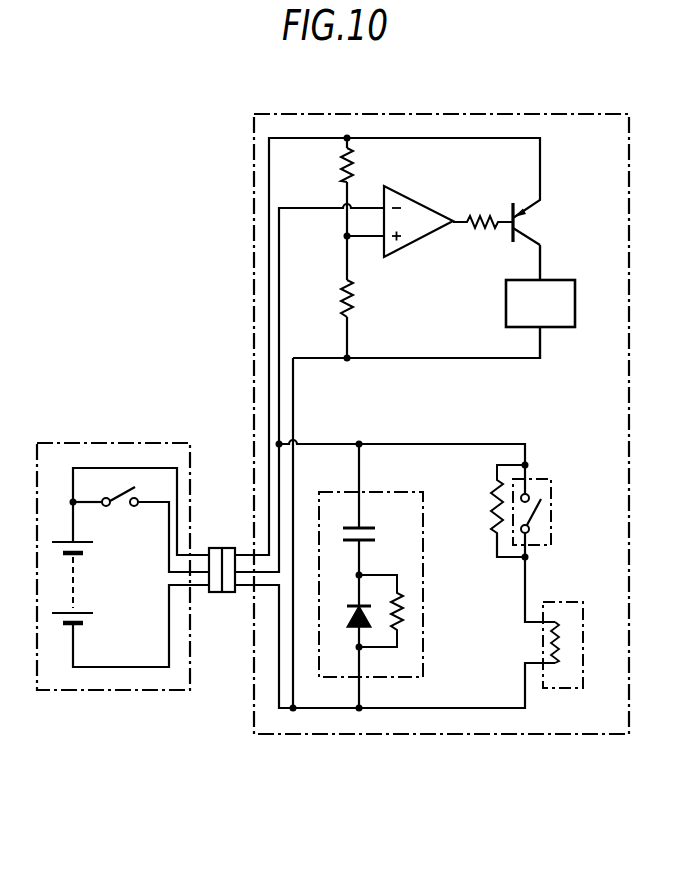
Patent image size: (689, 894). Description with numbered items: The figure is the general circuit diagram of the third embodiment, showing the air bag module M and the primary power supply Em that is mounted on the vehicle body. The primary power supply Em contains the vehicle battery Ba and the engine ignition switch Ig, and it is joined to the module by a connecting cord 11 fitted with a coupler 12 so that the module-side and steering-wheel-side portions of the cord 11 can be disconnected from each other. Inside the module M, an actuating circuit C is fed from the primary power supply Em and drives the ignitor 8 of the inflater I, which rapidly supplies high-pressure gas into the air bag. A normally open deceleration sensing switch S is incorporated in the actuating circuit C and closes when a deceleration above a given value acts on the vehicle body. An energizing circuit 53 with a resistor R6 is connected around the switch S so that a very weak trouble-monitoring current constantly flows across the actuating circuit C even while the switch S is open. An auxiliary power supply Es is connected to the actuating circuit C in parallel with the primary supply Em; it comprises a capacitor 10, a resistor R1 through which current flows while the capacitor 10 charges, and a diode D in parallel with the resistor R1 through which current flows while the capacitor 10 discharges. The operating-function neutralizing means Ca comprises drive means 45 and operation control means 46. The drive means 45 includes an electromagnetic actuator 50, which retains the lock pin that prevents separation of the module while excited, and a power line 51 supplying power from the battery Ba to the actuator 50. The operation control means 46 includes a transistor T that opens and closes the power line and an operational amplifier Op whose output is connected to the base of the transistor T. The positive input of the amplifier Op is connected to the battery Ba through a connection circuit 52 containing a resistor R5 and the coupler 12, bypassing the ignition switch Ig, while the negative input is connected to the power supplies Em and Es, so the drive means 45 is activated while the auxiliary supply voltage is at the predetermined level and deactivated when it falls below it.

The ignitor 8 is at (560, 656).
The capacitor 10 is at (368, 528).
The connecting cord 11 is at (246, 590).
The coupler 12 is at (217, 548).
The drive means 45 is at (550, 252).
The operation control means 46 is at (462, 257).
The electromagnetic actuator 50 is at (546, 319).
The power line 51 is at (540, 167).
The connection circuit 52 is at (347, 196).
The energizing circuit 53 is at (497, 552).
The air bag module M is at (458, 738).
The primary power supply Em is at (123, 594).
The battery Ba is at (78, 612).
The ignition switch Ig is at (120, 504).
The auxiliary power supply Es is at (424, 668).
The diode D is at (352, 618).
The resistor R1 is at (403, 612).
The resistor R5 is at (352, 162).
The resistor R6 is at (490, 512).
The operational amplifier Op is at (432, 249).
The transistor T is at (509, 243).
The operating-function neutralizing means Ca is at (511, 371).
The actuating circuit C is at (474, 450).
The deceleration sensing switch S is at (551, 524).
The inflater I is at (588, 618).